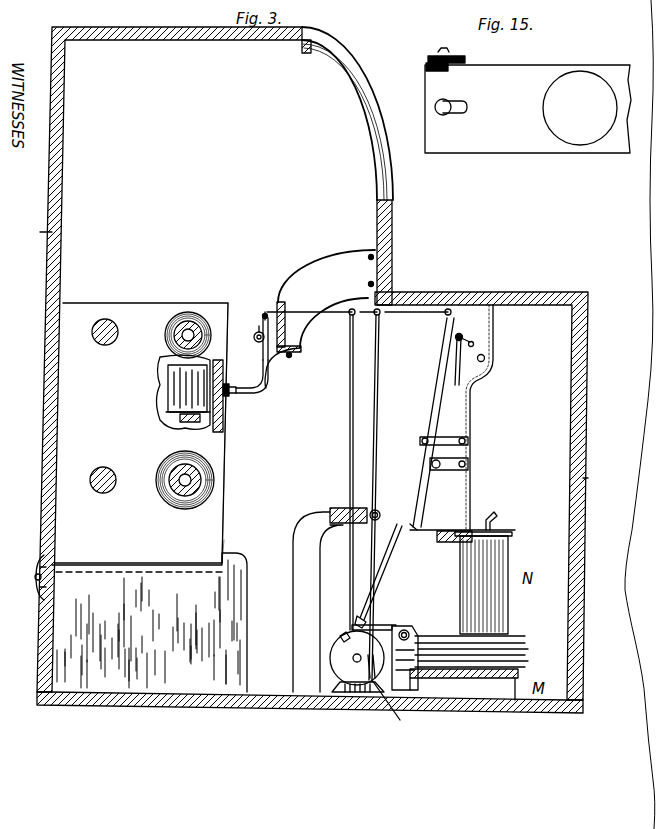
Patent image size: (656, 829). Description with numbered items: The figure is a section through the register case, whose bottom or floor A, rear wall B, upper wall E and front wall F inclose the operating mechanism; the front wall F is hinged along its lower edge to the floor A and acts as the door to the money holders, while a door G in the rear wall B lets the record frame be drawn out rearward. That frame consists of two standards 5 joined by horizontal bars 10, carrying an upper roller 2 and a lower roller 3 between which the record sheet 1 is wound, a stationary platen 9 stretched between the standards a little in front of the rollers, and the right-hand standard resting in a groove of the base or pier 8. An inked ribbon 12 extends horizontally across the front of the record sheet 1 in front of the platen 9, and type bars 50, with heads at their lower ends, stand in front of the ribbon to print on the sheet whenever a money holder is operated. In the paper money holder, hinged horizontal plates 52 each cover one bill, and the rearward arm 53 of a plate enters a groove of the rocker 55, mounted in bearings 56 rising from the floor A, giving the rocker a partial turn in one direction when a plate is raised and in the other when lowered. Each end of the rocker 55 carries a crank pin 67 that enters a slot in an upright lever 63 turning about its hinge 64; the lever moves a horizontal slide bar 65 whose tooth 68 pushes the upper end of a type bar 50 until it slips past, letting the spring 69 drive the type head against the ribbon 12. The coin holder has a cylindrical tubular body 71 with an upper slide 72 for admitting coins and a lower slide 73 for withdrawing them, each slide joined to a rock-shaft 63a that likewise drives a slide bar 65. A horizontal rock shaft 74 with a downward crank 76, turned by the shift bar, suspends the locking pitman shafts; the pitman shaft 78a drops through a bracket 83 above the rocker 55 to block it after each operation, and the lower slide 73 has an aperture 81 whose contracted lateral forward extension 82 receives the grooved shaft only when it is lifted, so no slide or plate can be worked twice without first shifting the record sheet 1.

In FIG. 3, the record sheet 1 is at (224, 464).
In FIG. 3, the upper roller 2 is at (166, 331).
In FIG. 3, the lower roller 3 is at (162, 472).
In FIG. 3, the standards 5 is at (223, 530).
In FIG. 3, the base or pier 8 is at (238, 626).
In FIG. 3, the platen 9 is at (224, 425).
In FIG. 3, the horizontal bars 10 is at (98, 345).
In FIG. 3, the ribbon 12 is at (232, 400).
In FIG. 3, the type bars 50 is at (246, 396).
In FIG. 3, the horizontal plates 52 is at (528, 668).
In FIG. 3, the rearward arm 53 is at (412, 630).
In FIG. 3, the rocker 55 is at (340, 667).
In FIG. 3, the bearings 56 is at (352, 706).
In FIG. 3, the upright lever 63 is at (348, 478).
In FIG. 3, the rock-shaft 63a is at (422, 606).
In FIG. 15, the rock-shaft 63a is at (455, 58).
In FIG. 3, the hinge 64 is at (332, 510).
In FIG. 3, the horizontal slide bar 65 is at (322, 318).
In FIG. 3, the crank pin 67 is at (342, 638).
In FIG. 3, the tooth 68 is at (260, 326).
In FIG. 3, the spring 69 is at (270, 370).
In FIG. 3, the cylindrical tubular body 71 is at (510, 598).
In FIG. 3, the upper slide 72 is at (497, 517).
In FIG. 15, the lower slide 73 is at (526, 150).
In FIG. 3, the rock shaft 74 is at (462, 326).
In FIG. 3, the crank 76 is at (479, 363).
In FIG. 3, the pitman shaft 78a is at (378, 582).
In FIG. 15, the aperture 81 is at (450, 104).
In FIG. 15, the lateral forward extension 82 is at (458, 112).
In FIG. 3, the bracket 83 is at (376, 630).
In FIG. 3, the bottom or floor A is at (258, 706).
In FIG. 3, the rear wall B is at (40, 232).
In FIG. 3, the upper wall E is at (126, 36).
In FIG. 3, the front wall F is at (588, 480).
In FIG. 3, the door G is at (46, 406).